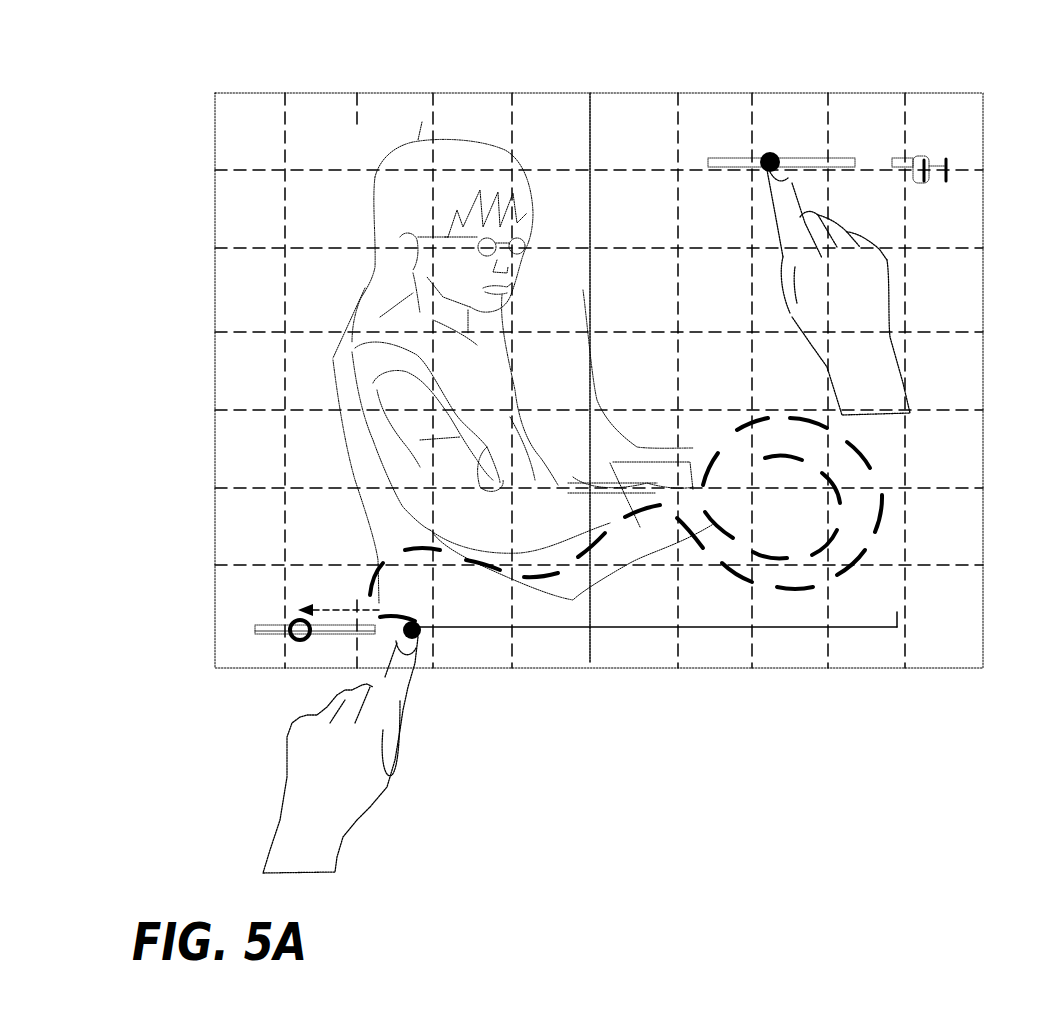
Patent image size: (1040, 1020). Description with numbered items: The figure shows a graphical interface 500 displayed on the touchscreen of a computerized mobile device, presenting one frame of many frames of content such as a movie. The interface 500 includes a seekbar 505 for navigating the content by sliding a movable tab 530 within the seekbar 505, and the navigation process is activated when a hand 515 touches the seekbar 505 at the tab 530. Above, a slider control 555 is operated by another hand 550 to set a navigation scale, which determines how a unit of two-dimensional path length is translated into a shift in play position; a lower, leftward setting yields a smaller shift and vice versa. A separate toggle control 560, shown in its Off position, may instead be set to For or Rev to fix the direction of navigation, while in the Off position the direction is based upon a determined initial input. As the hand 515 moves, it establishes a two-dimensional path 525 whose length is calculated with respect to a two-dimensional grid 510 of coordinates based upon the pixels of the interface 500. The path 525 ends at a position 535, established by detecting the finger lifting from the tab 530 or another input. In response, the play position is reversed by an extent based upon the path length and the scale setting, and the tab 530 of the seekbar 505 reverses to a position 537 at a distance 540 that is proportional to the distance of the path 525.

The graphical interface 500 is at (234, 69).
The seekbar 505 is at (673, 627).
The 2D grid 510 is at (288, 220).
The hand 515 is at (333, 840).
The 2D path 525 is at (837, 570).
The movable tab 530 is at (427, 633).
The end position of path 535 is at (752, 477).
The reversed tab position 537 is at (288, 636).
The distance 540 is at (336, 610).
The hand 550 is at (875, 310).
The slider control 555 is at (840, 157).
The toggle control 560 is at (945, 180).